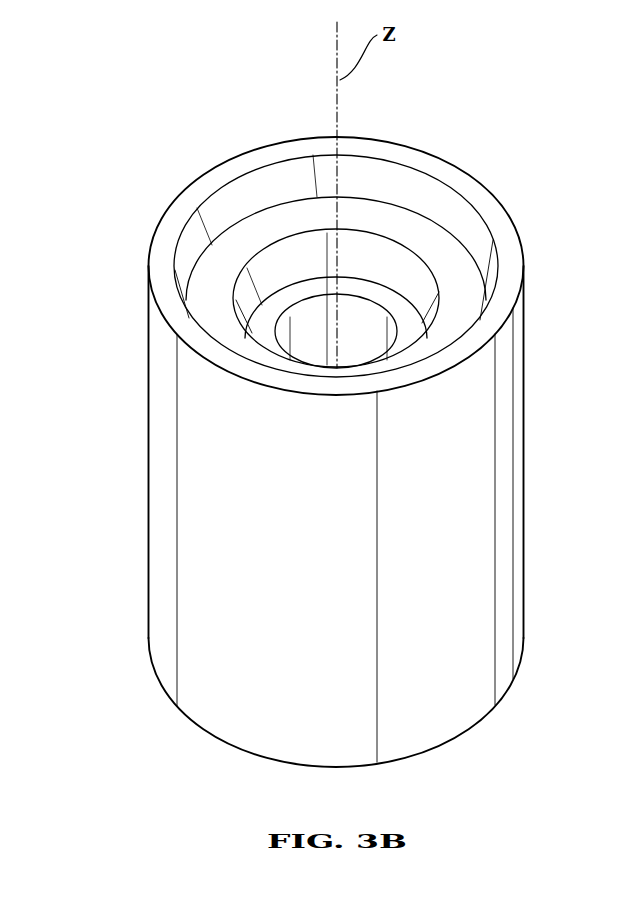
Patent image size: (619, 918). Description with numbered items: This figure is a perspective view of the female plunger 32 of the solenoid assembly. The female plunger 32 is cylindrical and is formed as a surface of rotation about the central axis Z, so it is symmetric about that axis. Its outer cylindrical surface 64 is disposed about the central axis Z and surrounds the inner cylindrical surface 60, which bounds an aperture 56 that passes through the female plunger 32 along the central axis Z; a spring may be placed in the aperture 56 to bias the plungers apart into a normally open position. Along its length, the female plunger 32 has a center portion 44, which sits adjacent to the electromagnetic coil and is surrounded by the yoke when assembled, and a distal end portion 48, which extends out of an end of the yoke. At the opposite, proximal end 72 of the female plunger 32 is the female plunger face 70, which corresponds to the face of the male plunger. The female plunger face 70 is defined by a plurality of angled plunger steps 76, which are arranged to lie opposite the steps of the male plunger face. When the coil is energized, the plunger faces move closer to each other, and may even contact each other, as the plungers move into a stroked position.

The female plunger 32 is at (140, 233).
The center portion 44 is at (160, 345).
The distal end portion 48 is at (200, 725).
The aperture 56 is at (321, 314).
The inner cylindrical surface 60 is at (367, 312).
The outer cylindrical surface 64 is at (523, 625).
The female plunger face 70 is at (278, 213).
The proximal end 72 is at (413, 145).
The angled plunger steps 76 is at (452, 250).